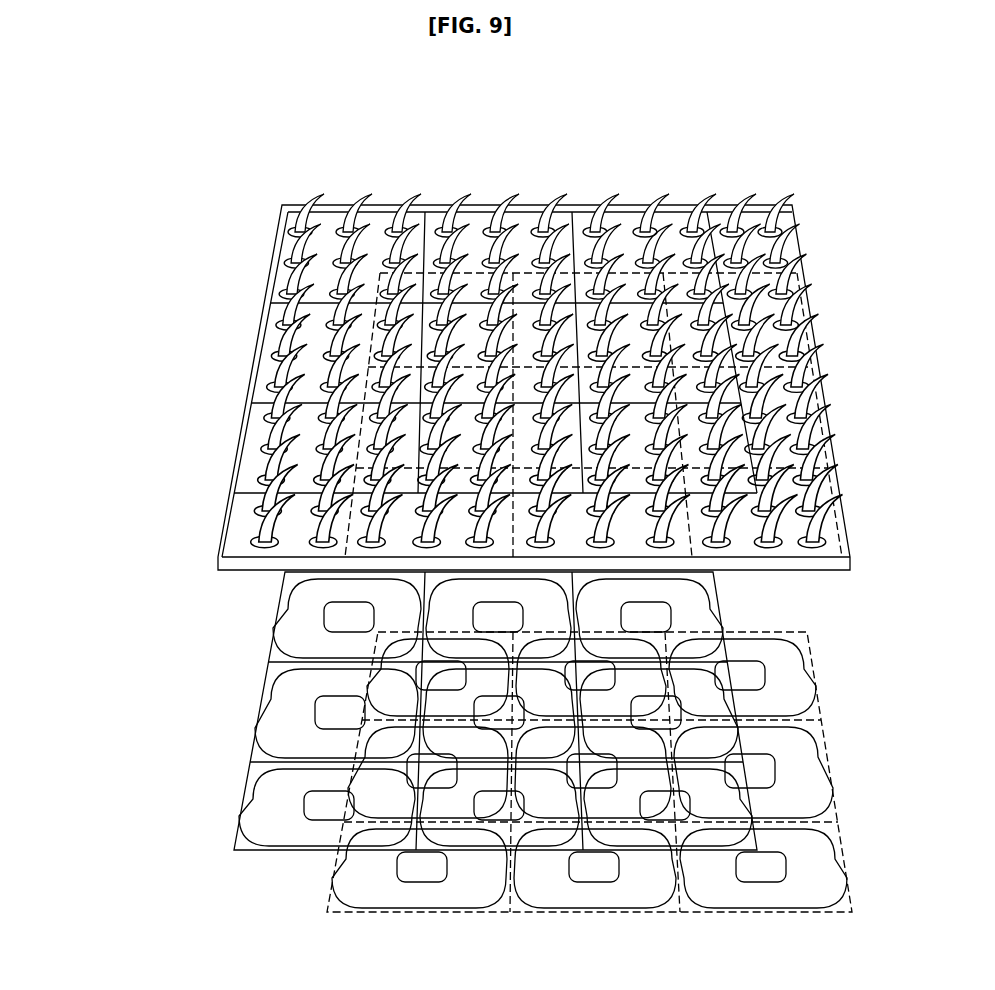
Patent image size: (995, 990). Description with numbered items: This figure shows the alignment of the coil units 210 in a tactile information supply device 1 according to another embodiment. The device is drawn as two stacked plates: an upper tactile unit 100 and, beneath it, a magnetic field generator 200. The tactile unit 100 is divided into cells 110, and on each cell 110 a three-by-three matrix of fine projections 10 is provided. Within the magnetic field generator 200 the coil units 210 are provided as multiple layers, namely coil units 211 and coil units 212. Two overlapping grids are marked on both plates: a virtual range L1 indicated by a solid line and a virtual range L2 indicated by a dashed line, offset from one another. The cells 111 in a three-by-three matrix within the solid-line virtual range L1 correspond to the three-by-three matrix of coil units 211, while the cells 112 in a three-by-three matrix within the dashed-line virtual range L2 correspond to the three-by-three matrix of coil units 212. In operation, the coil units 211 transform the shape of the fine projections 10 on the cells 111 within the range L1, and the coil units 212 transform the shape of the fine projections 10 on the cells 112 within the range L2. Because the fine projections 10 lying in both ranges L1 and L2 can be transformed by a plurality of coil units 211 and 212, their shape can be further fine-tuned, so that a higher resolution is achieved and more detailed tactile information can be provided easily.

The hair transplant / skin-attachable pattern assembly 1 is at (771, 167).
The fine projection 10 is at (668, 212).
The tactile unit 100 is at (241, 293).
The cell 110 is at (558, 118).
The cell within the first virtual range 111 is at (387, 212).
The cell within the second virtual range 112 is at (733, 222).
The magnetic field generator 200 is at (256, 650).
The coil unit 210 is at (140, 813).
The first-layer coil unit 211 is at (273, 805).
The second-layer coil unit 212 is at (357, 888).
The virtual range indicated by a solid line L1 is at (256, 385).
The virtual range indicated by a dashed line L2 is at (333, 527).